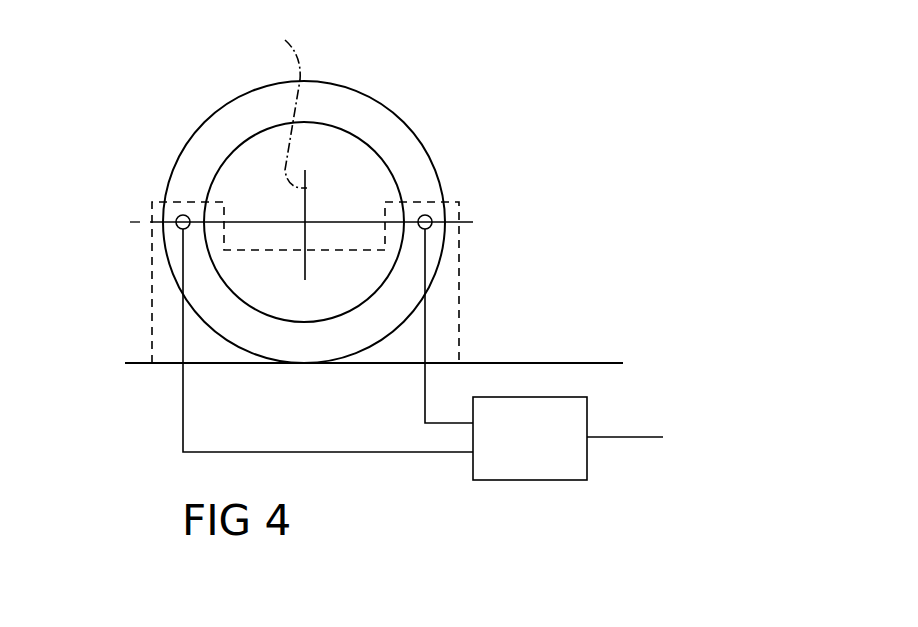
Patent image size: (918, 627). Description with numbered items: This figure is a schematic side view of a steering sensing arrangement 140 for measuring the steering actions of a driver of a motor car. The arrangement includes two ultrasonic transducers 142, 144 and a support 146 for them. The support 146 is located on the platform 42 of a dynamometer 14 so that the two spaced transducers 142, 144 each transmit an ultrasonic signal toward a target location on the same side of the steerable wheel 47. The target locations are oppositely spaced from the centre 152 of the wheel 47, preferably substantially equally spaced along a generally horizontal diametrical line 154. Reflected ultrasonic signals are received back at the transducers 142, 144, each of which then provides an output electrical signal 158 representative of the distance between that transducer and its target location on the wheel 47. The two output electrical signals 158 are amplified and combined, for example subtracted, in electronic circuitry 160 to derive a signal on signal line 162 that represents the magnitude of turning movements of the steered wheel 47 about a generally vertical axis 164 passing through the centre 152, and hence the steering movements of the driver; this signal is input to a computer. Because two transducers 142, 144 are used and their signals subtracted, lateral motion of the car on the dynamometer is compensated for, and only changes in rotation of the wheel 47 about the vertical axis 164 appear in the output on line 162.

The steering sensing arrangement 140 is at (186, 94).
The steerable wheel 47 is at (383, 103).
The ultrasonic transducer 142 is at (183, 215).
The ultrasonic transducer 144 is at (425, 215).
The centre of the wheel 152 is at (307, 222).
The vertical axis 164 is at (271, 105).
The horizontal diametrical line 154 is at (140, 223).
The support 146 is at (152, 293).
The platform 42 is at (518, 363).
The output electrical signal 158 is at (185, 422).
The electronic circuitry 160 is at (515, 447).
The signal line 162 is at (635, 437).
The dynamometer 14 is at (328, 407).